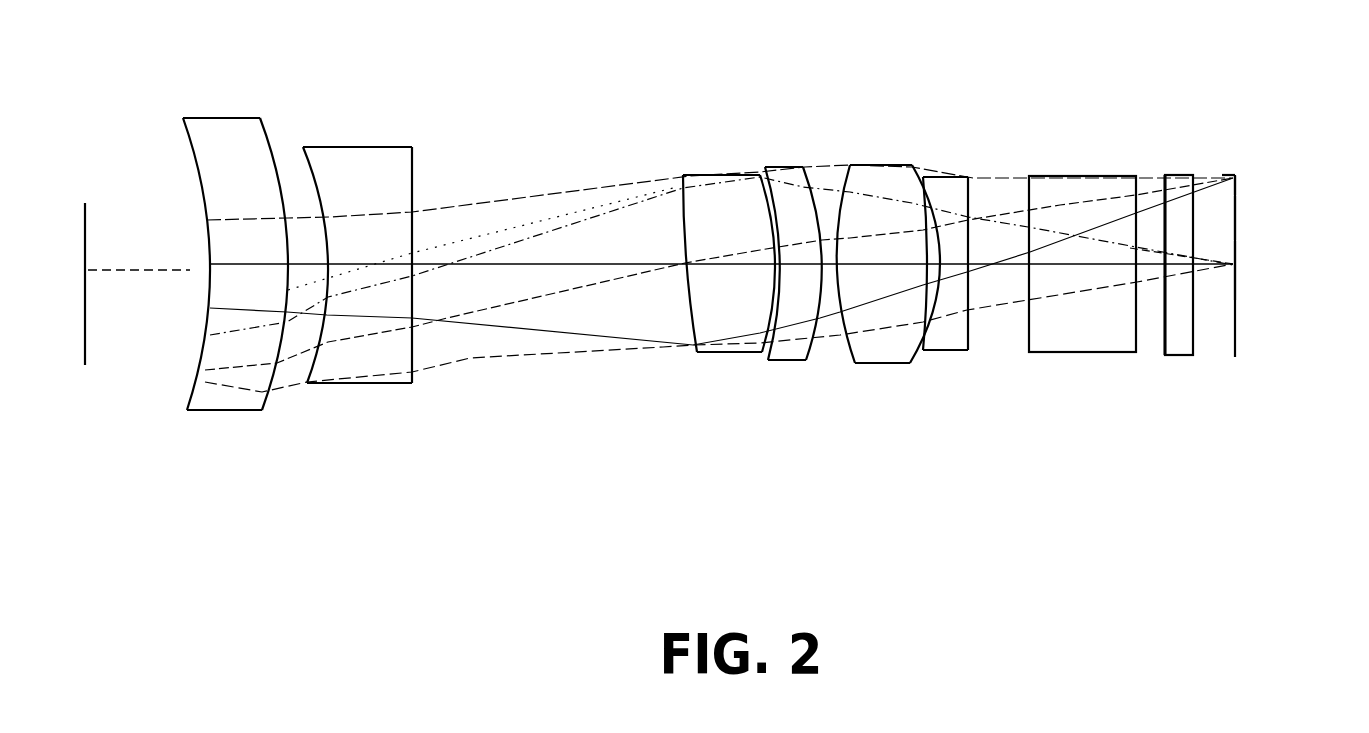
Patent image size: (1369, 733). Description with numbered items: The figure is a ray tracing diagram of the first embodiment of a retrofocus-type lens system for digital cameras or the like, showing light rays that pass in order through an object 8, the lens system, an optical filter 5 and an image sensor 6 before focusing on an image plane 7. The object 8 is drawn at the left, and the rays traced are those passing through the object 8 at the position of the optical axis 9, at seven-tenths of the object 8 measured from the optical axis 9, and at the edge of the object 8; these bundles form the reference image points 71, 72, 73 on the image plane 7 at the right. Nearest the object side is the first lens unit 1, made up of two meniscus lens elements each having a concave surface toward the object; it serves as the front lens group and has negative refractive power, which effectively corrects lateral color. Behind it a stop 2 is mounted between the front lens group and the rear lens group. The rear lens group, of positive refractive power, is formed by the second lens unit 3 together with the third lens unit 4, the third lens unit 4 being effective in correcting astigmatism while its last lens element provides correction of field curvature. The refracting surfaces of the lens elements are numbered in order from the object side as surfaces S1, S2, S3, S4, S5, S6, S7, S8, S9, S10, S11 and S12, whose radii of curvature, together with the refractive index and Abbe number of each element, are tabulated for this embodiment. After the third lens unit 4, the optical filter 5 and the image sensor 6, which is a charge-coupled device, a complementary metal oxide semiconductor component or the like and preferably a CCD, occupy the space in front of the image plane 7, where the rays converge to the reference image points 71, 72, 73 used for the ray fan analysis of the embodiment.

The first lens unit 1 is at (226, 268).
The stop 2 is at (686, 278).
The second lens unit 3 is at (778, 278).
The third lens unit 4 is at (975, 277).
The optical filter 5 is at (1073, 203).
The image sensor 6 is at (1173, 203).
The image plane 7 is at (1222, 183).
The object 8 is at (85, 203).
The optical axis 9 is at (583, 270).
The reference image point 71 is at (1238, 273).
The reference image point 72 is at (1238, 207).
The reference image point 73 is at (1238, 183).
The lens surface S1 is at (188, 385).
The lens surface S2 is at (268, 388).
The lens surface S3 is at (320, 365).
The lens surface S4 is at (418, 365).
The lens surface S5 is at (693, 343).
The lens surface S6 is at (760, 347).
The lens surface S7 is at (772, 360).
The lens surface S8 is at (822, 360).
The lens surface S9 is at (853, 363).
The lens surface S10 is at (913, 343).
The lens surface S11 is at (927, 340).
The lens surface S12 is at (978, 340).